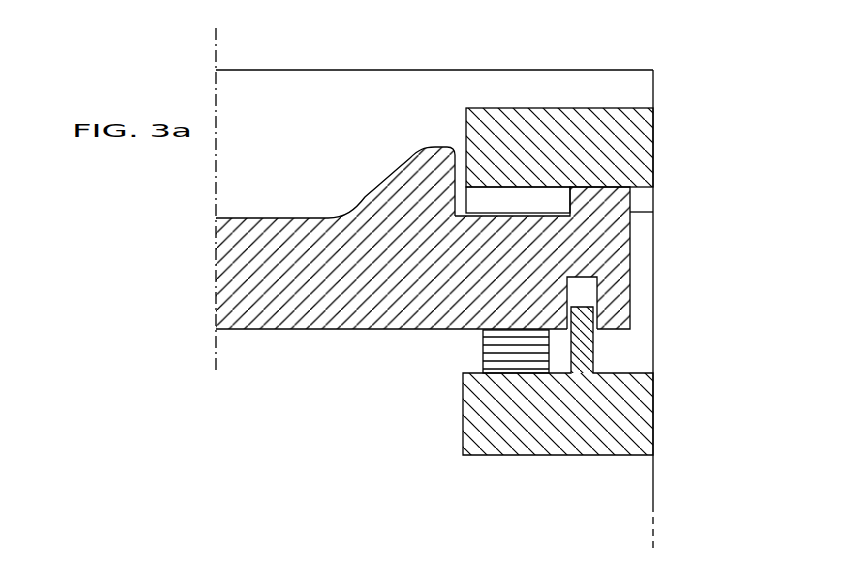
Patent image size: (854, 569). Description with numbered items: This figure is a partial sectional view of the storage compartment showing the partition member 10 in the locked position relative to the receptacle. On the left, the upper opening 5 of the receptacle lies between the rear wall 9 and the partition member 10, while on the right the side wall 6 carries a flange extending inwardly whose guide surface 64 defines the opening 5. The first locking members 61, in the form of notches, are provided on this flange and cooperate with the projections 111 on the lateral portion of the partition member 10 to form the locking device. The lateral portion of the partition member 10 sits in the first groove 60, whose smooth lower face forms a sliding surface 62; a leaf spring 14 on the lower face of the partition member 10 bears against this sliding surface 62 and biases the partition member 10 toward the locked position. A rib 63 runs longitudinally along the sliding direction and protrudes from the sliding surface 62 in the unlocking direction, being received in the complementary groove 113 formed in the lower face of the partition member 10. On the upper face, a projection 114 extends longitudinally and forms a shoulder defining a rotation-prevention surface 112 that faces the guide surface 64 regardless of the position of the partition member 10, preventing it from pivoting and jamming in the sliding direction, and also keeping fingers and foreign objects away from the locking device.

The upper opening 5 is at (532, 117).
The side wall 6 is at (657, 83).
The rear wall 9 is at (293, 88).
The partition member 10 is at (472, 221).
The leaf spring 14 is at (508, 342).
The first groove 60 is at (554, 380).
The first locking members 61 is at (643, 205).
The sliding surface 62 is at (584, 380).
The rib 63 is at (587, 348).
The guide surface 64 is at (466, 112).
The projections 111 is at (607, 203).
The rotation-prevention surface 112 is at (457, 147).
The complementary groove 113 is at (588, 293).
The projection 114 is at (387, 202).